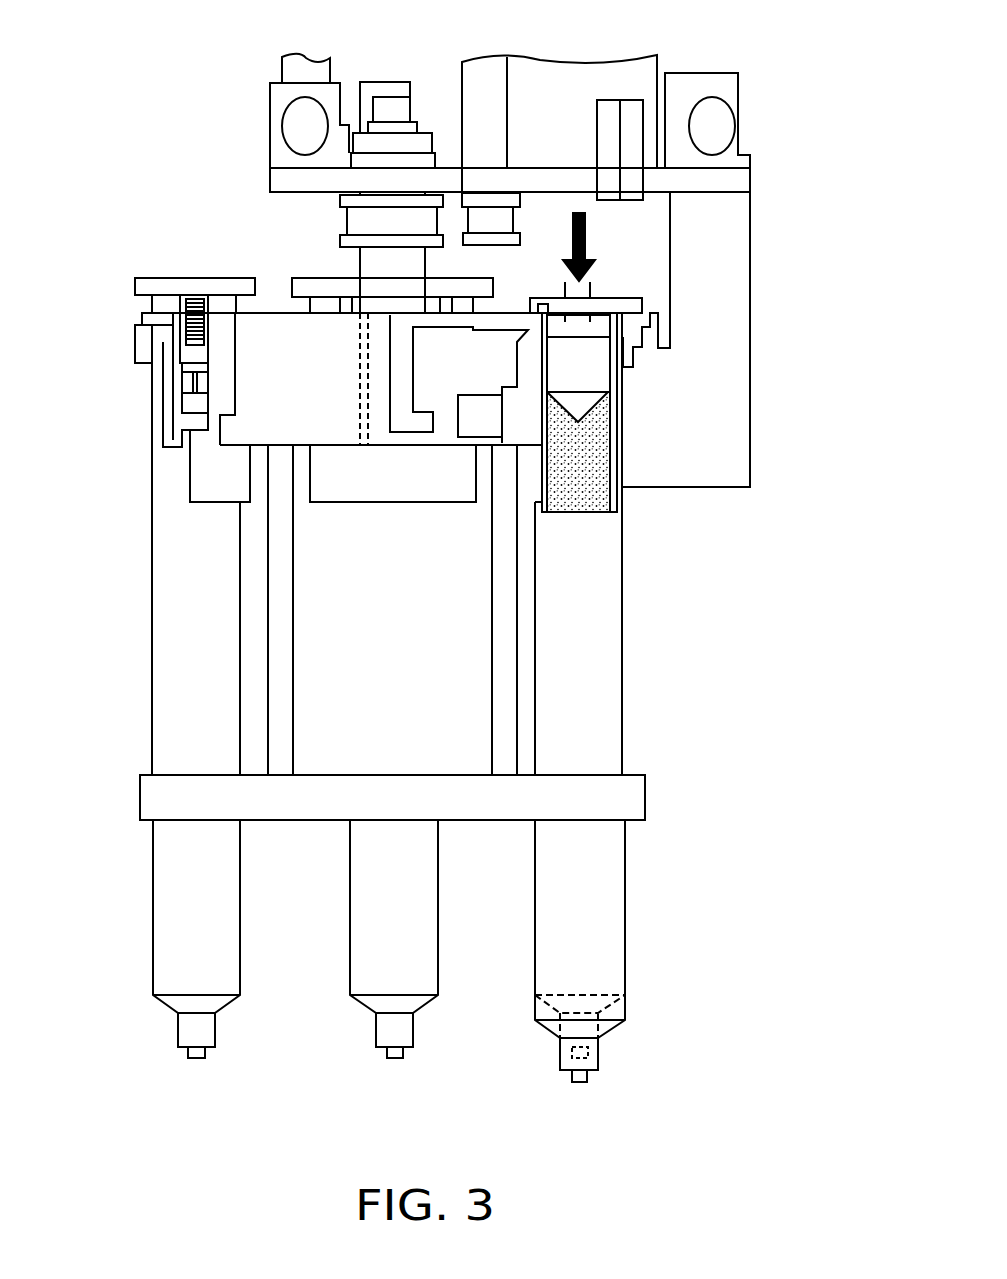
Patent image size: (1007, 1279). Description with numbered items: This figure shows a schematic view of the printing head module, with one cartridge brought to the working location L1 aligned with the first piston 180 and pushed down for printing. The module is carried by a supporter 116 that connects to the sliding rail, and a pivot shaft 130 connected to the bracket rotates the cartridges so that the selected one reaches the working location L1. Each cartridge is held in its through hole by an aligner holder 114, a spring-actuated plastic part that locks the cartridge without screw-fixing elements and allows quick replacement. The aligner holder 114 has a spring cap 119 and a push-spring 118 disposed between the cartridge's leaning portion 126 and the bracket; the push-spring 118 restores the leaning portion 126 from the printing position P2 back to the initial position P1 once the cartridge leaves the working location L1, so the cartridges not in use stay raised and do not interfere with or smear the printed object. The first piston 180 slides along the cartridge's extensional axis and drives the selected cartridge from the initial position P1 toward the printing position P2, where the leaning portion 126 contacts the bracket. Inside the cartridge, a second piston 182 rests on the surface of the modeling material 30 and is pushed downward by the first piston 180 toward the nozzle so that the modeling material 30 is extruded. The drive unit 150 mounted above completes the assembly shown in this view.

The driving unit 150 is at (553, 90).
The pivot shaft 130 is at (373, 264).
The leaning portion 126 is at (538, 308).
The spring cap 119 is at (195, 302).
The push-spring 118 is at (187, 332).
The aligner holder 114 is at (213, 477).
The first piston 180 is at (600, 332).
The supporter 116 is at (718, 325).
The second piston 182 is at (592, 375).
The modeling material 30 is at (587, 462).
The working location L1 is at (630, 687).
The initial position P1 is at (588, 1058).
The printing position P2 is at (587, 1082).